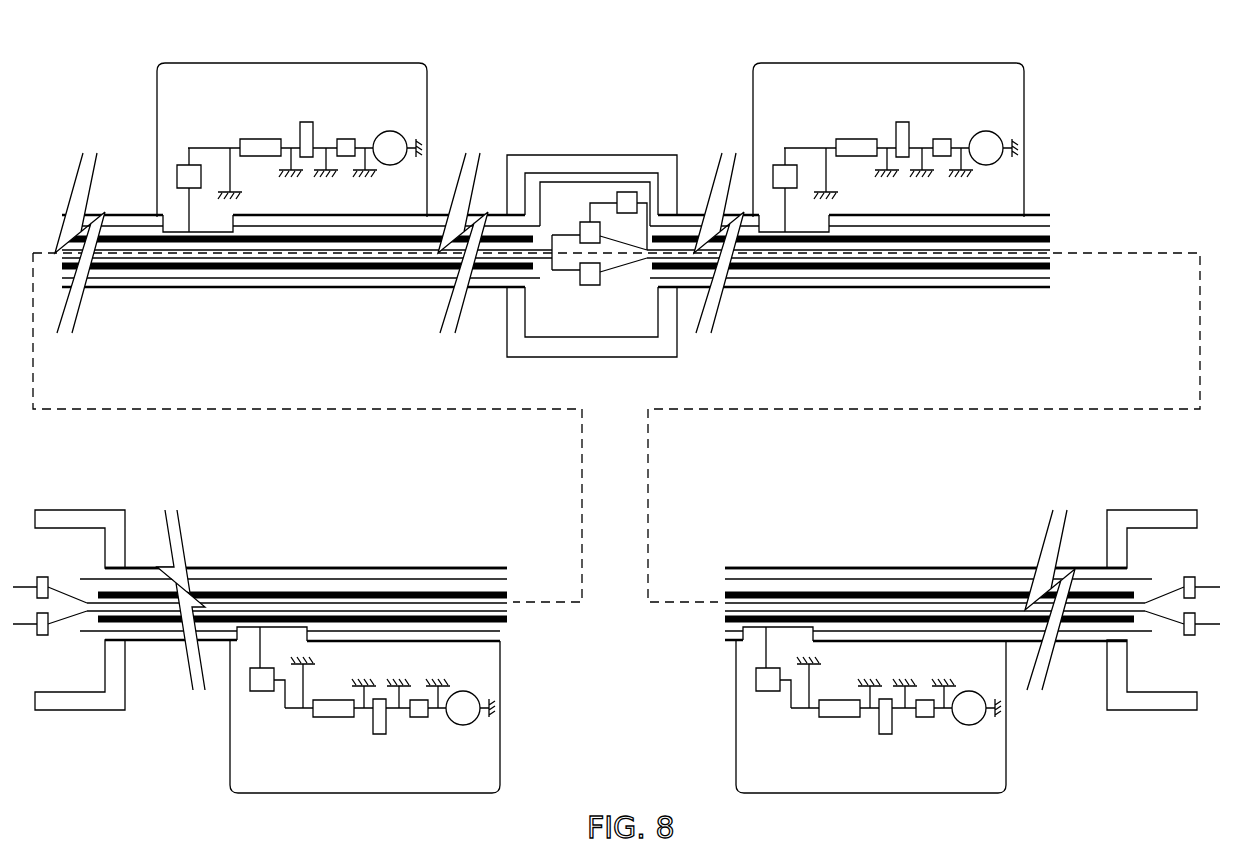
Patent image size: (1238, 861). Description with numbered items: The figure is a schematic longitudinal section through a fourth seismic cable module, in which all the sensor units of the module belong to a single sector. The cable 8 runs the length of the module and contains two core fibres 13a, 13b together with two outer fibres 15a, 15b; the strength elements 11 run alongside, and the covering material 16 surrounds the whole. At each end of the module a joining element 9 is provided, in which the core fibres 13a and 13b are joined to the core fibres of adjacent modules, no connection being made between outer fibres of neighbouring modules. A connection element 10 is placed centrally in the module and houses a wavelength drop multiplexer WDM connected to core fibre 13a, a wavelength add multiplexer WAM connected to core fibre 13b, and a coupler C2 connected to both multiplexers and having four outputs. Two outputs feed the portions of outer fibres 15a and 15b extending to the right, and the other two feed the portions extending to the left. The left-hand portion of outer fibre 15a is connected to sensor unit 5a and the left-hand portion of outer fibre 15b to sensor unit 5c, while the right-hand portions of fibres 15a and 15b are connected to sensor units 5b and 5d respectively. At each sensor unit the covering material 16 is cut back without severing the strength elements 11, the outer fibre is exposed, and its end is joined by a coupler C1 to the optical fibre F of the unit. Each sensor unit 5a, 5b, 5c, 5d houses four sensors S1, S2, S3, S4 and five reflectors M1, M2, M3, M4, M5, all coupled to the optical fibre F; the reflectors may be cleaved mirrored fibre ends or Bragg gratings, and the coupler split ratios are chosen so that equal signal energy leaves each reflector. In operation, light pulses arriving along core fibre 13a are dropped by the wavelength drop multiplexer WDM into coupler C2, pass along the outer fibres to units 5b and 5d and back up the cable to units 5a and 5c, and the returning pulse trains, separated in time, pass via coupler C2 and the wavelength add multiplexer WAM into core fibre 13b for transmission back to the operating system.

The sensor unit 5a is at (388, 63).
The sensor unit 5b is at (984, 63).
The sensor unit 5c is at (500, 682).
The sensor unit 5d is at (736, 684).
The cable 8 is at (258, 568).
The joining element 9 is at (48, 510).
The connection element 10 is at (612, 155).
The strength elements 11 is at (143, 238).
The core fibre 13a is at (238, 246).
The core fibre 13b is at (106, 270).
The outer fibre 15a is at (187, 207).
The outer fibre 15b is at (383, 290).
The covering material 16 is at (318, 280).
The coupler C1 is at (182, 165).
The coupler C2 is at (628, 193).
The optical fibre F is at (228, 148).
The reflector M1 is at (544, 428).
The reflector M2 is at (586, 428).
The reflector M3 is at (624, 428).
The reflector M4 is at (666, 428).
The reflector M5 is at (421, 140).
The sensor S1 is at (262, 140).
The sensor S2 is at (308, 122).
The sensor S3 is at (347, 140).
The sensor S4 is at (392, 131).
The wavelength drop multiplexer WDM is at (588, 222).
The wavelength add multiplexer WAM is at (591, 285).